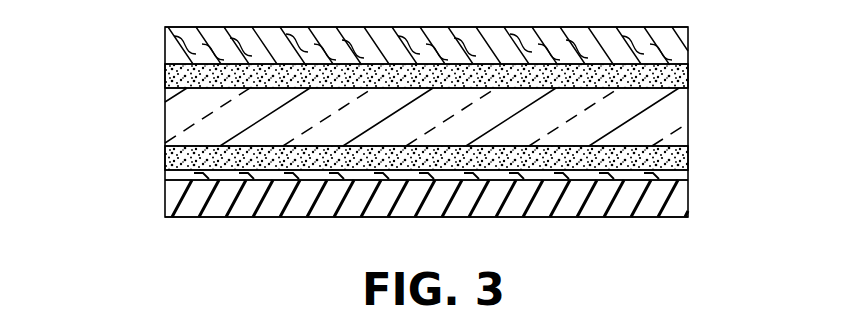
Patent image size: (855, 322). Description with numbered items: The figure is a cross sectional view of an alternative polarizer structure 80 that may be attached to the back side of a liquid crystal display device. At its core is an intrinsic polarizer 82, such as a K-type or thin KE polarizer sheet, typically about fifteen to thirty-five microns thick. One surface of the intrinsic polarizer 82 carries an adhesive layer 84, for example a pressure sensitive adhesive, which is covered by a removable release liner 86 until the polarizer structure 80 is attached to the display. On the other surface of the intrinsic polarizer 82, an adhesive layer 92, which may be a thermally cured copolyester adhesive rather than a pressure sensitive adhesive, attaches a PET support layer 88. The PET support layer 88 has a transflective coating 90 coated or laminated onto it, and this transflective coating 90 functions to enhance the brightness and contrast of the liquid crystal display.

The polarizer structure 80 is at (106, 137).
The intrinsic polarizer 82 is at (687, 122).
The adhesive layer 84 is at (688, 78).
The release liner 86 is at (688, 40).
The PET support layer 88 is at (687, 208).
The transflective coating 90 is at (167, 178).
The adhesive layer 92 is at (688, 162).